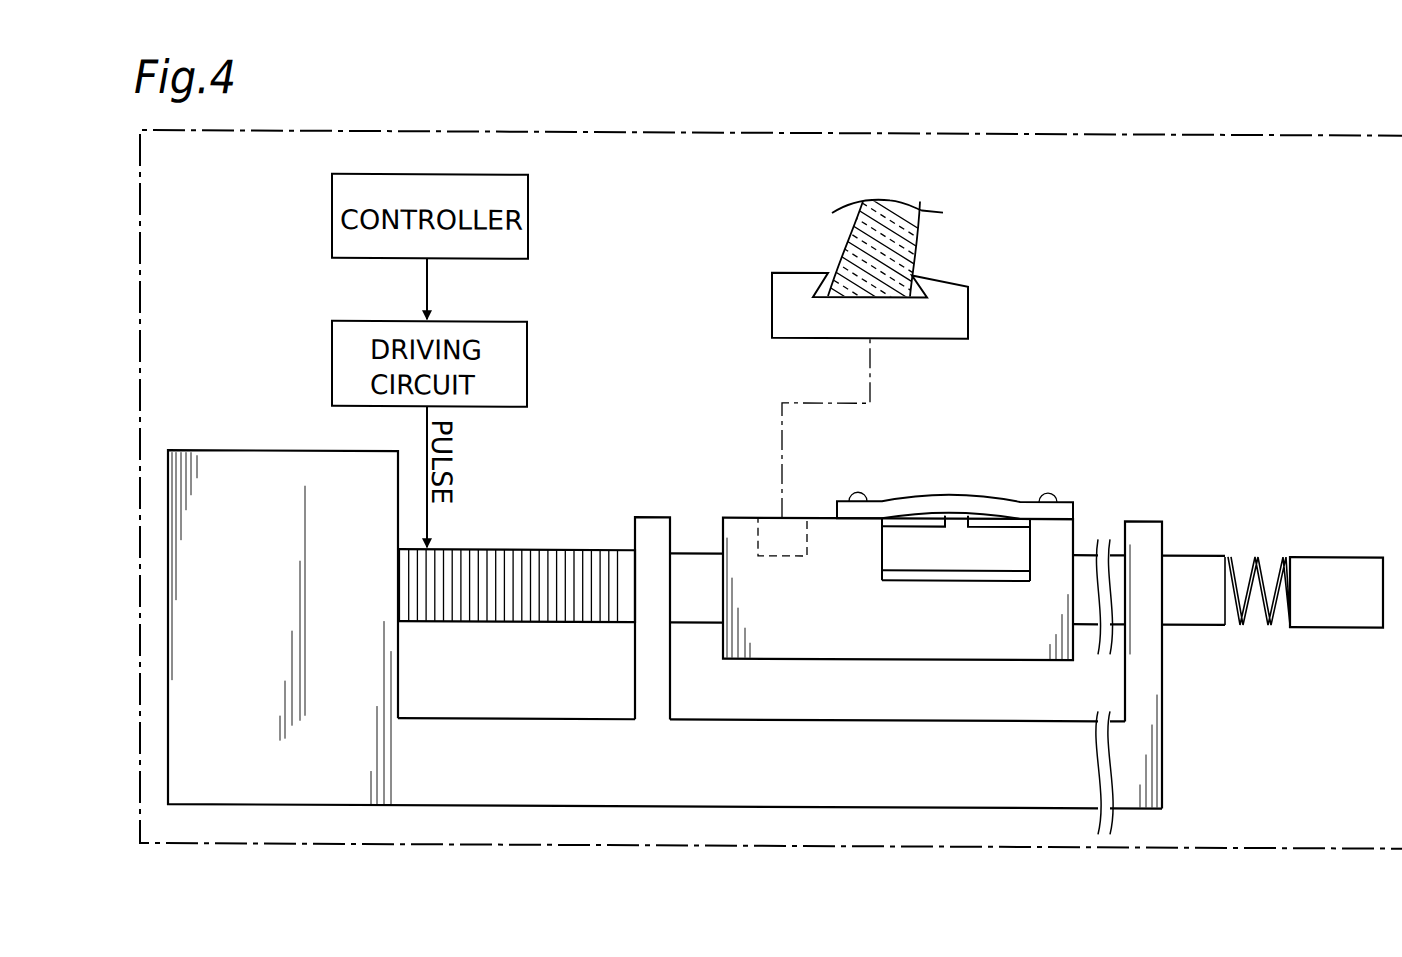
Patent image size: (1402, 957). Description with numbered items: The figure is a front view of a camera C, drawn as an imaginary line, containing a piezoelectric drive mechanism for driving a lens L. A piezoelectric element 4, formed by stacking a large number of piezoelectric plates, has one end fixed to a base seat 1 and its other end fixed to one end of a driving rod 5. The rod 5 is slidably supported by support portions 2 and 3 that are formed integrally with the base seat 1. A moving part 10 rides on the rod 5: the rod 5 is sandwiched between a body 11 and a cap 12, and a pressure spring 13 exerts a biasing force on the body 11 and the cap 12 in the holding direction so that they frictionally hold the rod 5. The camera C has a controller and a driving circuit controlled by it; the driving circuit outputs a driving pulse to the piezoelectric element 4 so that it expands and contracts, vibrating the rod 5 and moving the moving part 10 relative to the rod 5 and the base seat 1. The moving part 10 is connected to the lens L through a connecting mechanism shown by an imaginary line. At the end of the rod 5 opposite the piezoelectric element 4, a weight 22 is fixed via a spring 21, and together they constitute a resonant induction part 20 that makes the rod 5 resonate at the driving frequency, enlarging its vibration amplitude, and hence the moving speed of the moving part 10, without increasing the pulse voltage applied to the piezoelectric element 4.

The base seat 1 is at (248, 778).
The support portion 2 is at (650, 527).
The support portion 3 is at (1143, 533).
The piezoelectric element 4 is at (400, 530).
The driving rod 5 is at (692, 568).
The moving part 10 is at (955, 476).
The body 11 is at (948, 650).
The cap 12 is at (925, 540).
The pressure spring 13 is at (1010, 500).
The resonant induction part 20 is at (1304, 602).
The spring 21 is at (1270, 610).
The weight 22 is at (1347, 615).
The lens L is at (913, 246).
The camera C is at (548, 845).